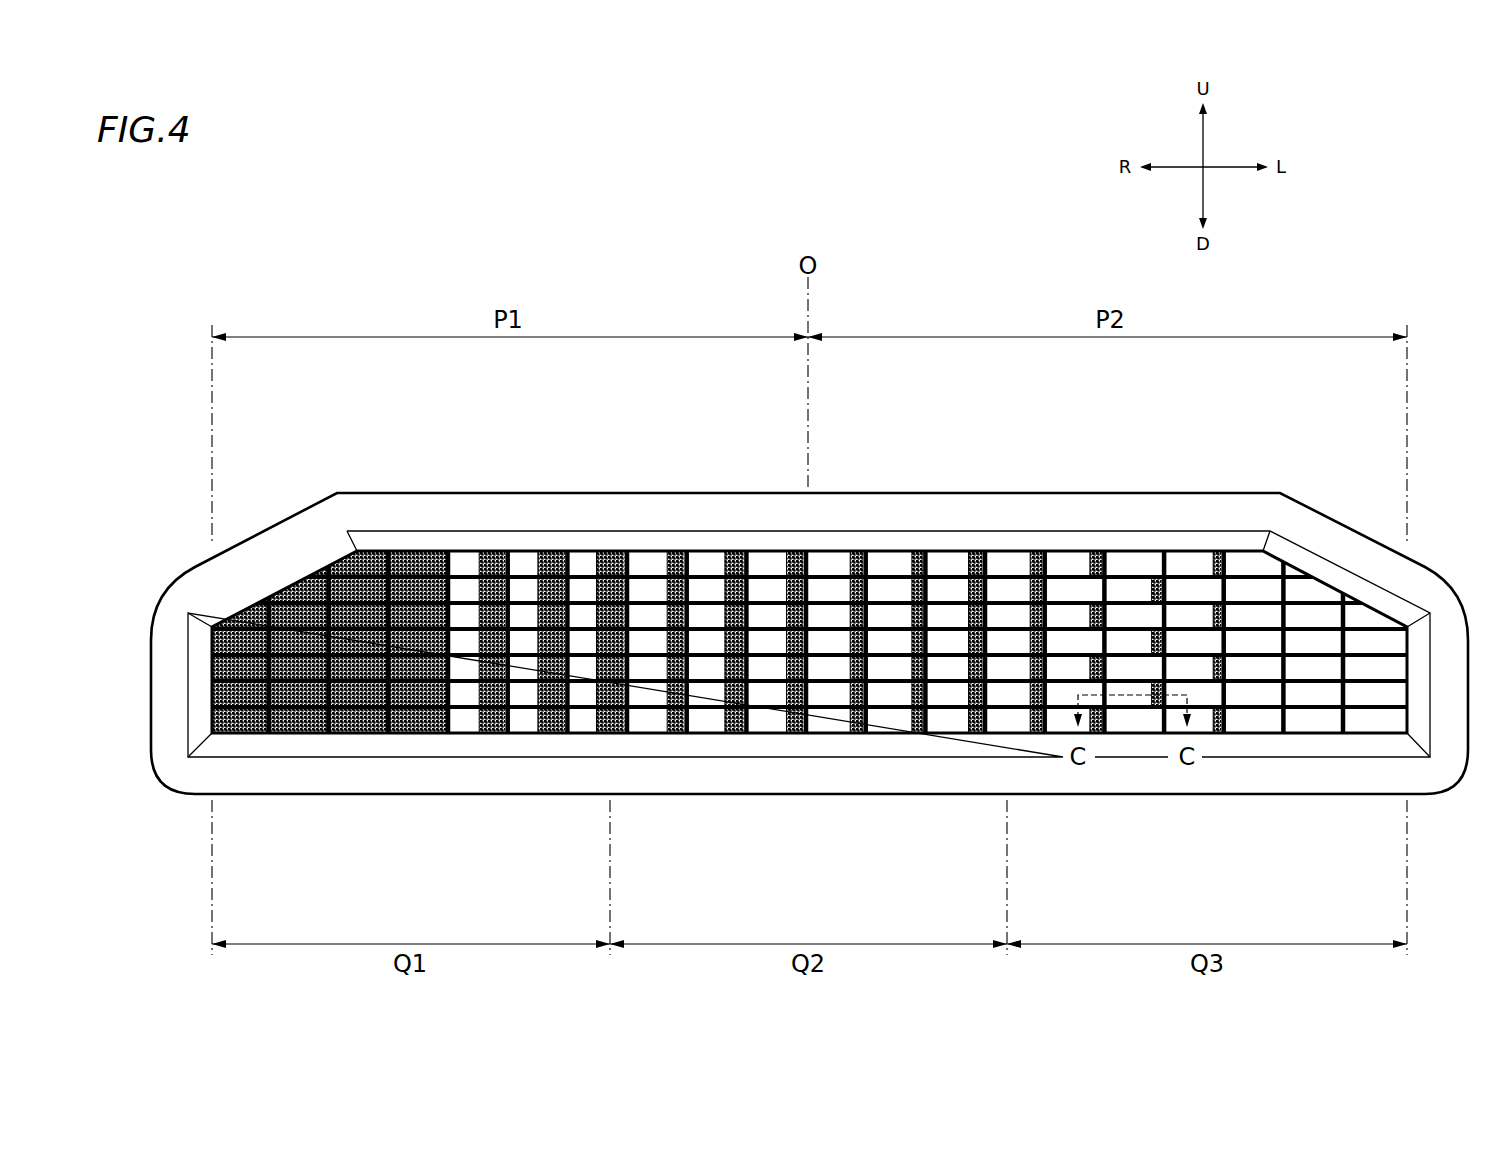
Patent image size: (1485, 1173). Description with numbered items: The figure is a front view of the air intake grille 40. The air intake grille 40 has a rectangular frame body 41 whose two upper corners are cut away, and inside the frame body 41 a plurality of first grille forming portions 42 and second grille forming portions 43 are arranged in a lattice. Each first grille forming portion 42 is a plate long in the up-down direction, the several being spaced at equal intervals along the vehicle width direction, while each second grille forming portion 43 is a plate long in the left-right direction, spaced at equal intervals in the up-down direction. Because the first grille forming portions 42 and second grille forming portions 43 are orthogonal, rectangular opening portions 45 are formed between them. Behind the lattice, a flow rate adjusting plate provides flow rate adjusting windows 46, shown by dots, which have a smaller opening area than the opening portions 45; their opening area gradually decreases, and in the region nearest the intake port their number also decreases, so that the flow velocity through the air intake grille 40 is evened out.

The air intake grille 40 is at (687, 492).
The frame body 41 is at (873, 513).
The first grille forming portion 42 is at (1318, 625).
The second grille forming portion 43 is at (430, 627).
The opening portion 45 is at (300, 672).
The flow rate adjusting window 46 is at (610, 590).